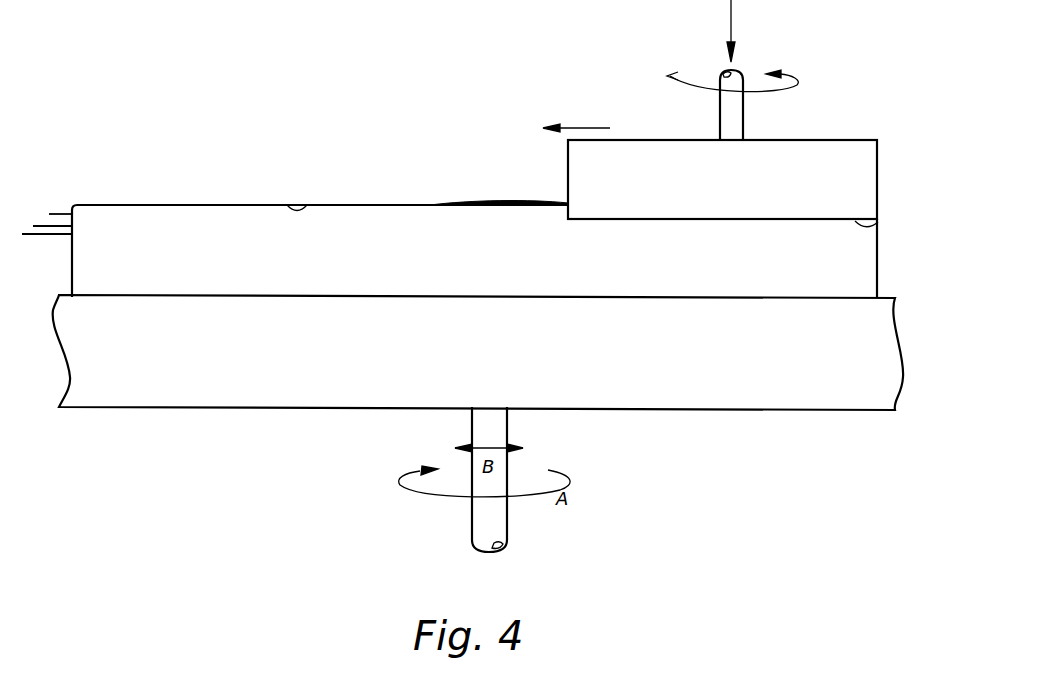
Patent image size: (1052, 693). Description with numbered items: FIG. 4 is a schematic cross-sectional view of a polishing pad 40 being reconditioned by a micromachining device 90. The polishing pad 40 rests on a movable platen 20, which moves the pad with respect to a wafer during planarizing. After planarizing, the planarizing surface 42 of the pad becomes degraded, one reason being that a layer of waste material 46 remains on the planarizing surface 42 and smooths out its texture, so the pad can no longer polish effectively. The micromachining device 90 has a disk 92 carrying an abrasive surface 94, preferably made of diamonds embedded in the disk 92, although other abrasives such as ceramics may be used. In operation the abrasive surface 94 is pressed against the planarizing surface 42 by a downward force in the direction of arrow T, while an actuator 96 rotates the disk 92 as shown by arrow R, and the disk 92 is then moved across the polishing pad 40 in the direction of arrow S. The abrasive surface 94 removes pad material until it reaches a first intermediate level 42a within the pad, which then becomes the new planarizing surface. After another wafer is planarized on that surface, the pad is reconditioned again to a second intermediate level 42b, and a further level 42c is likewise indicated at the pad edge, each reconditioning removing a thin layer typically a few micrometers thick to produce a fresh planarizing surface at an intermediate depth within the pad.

The movable platen 20 is at (498, 367).
The polishing pad 40 is at (498, 272).
The planarizing surface 42 is at (307, 205).
The first intermediate level 42a is at (63, 213).
The second intermediate level 42b is at (41, 225).
The edge of planarizing surface 42c is at (52, 236).
The layer of waste material 46 is at (476, 203).
The micromachining device 90 is at (834, 58).
The disk 92 is at (734, 189).
The abrasive surface 94 is at (800, 219).
The actuator 96 is at (759, 113).